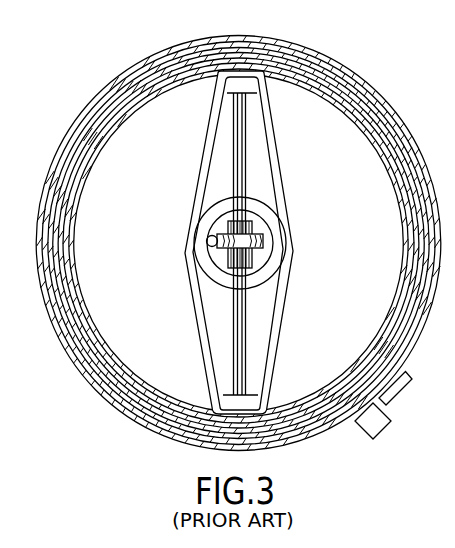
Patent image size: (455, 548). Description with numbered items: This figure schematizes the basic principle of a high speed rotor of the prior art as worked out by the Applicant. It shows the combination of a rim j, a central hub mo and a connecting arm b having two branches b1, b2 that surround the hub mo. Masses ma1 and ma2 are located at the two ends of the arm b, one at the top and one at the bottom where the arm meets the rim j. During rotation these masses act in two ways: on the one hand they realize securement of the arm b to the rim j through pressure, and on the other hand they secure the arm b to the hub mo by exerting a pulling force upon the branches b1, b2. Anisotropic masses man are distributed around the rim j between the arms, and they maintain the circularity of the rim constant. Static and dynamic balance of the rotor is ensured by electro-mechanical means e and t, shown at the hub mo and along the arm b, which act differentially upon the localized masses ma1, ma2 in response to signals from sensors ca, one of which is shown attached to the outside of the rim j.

The rim j is at (382, 113).
The anisotropic masses man is at (238, 243).
The connecting arm b is at (246, 215).
The branch b1 is at (201, 181).
The branch b2 is at (278, 167).
The mass ma1 is at (240, 82).
The mass ma2 is at (243, 403).
The electro-mechanical means t is at (241, 128).
The hub mo is at (283, 233).
The electro-mechanical means e is at (228, 247).
The sensors ca is at (377, 420).